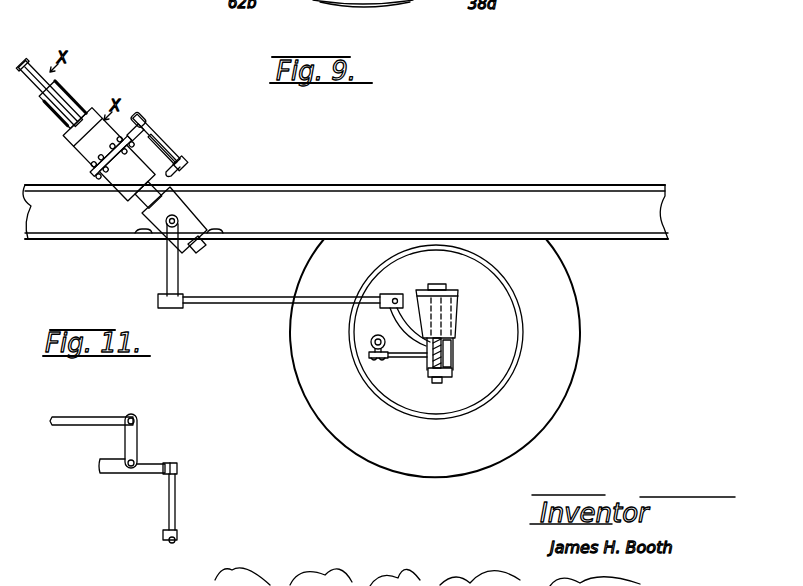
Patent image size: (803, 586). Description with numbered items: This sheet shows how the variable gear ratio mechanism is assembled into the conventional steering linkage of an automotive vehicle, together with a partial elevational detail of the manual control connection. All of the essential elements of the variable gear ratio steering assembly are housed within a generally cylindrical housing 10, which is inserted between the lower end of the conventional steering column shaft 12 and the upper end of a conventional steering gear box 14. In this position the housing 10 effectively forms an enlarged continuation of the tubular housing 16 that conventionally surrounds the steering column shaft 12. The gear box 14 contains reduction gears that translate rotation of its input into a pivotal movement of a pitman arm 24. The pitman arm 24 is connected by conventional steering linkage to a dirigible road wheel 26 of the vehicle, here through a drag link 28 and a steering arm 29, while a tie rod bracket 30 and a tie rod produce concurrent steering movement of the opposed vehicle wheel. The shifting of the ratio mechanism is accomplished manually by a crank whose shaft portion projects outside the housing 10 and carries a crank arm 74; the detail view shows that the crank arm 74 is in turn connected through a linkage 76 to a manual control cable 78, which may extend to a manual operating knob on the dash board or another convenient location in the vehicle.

In FIG. 9, the housing 10 is at (115, 117).
In FIG. 9, the steering column shaft 12 is at (25, 58).
In FIG. 9, the steering gear box 14 is at (191, 202).
In FIG. 9, the tubular housing 16 is at (63, 84).
In FIG. 9, the pitman arm 24 is at (179, 272).
In FIG. 9, the dirigible road wheel 26 is at (575, 308).
In FIG. 9, the drag link 28 is at (231, 304).
In FIG. 9, the steering arm 29 is at (401, 326).
In FIG. 9, the tie rod bracket 30 is at (390, 362).
In FIG. 9, the crank arm 74 is at (168, 173).
In FIG. 11, the crank arm 74 is at (166, 540).
In FIG. 9, the linkage 76 is at (152, 148).
In FIG. 11, the linkage 76 is at (160, 461).
In FIG. 9, the control cable 78 is at (140, 118).
In FIG. 11, the control cable 78 is at (88, 416).